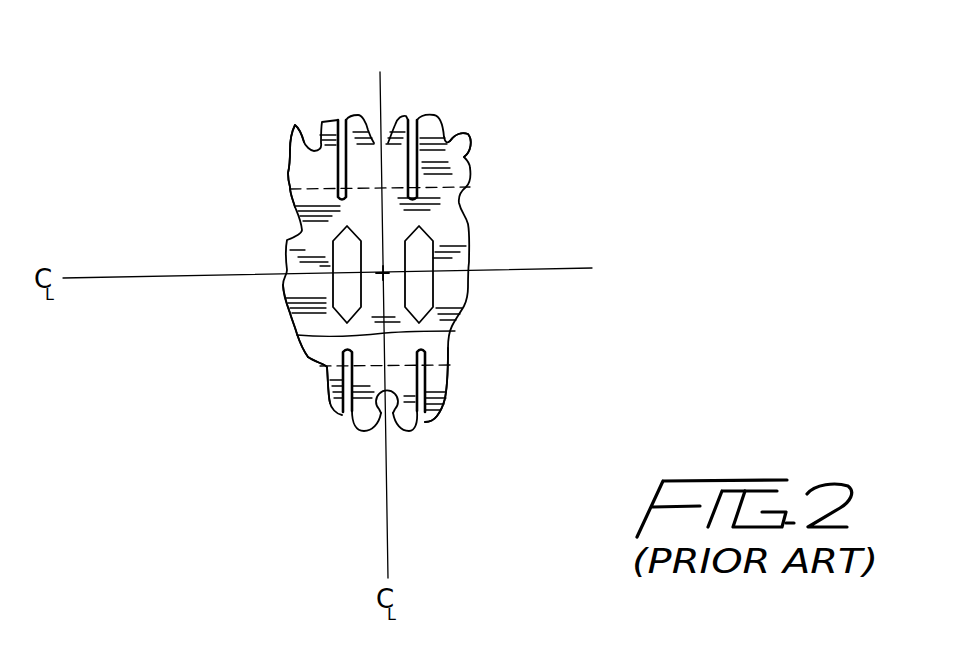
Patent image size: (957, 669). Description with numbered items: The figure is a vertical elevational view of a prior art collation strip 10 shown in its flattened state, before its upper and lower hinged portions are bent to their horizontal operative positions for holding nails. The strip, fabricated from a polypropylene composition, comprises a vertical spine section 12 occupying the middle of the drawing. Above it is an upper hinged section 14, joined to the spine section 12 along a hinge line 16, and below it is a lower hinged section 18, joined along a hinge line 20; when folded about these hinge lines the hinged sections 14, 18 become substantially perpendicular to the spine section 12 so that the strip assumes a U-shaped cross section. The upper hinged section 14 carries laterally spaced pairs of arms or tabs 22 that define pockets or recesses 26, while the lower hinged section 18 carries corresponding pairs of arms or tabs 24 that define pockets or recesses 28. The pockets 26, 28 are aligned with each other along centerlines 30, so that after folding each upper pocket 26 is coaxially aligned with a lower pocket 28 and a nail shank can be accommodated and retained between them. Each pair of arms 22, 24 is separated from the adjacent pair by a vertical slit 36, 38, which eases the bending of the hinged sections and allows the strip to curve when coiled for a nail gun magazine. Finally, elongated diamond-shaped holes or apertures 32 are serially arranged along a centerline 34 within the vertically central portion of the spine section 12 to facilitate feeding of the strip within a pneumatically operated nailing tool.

The collation strip 10 is at (490, 66).
The vertical spine section 12 is at (460, 315).
The upper hinged section 14 is at (471, 160).
The hinge line 16 is at (289, 198).
The lower hinged section 18 is at (441, 398).
The hinge line 20 is at (304, 360).
The arms or tabs 22 is at (366, 123).
The arms or tabs 24 is at (360, 427).
The pockets or recesses 26 is at (290, 143).
The pockets or recesses 28 is at (350, 413).
The centerlines 30 is at (298, 335).
The diamond-shaped holes or apertures 32 is at (424, 292).
The centerline 34 is at (272, 274).
The vertical slit 36 is at (468, 175).
The vertical slit 38 is at (447, 373).